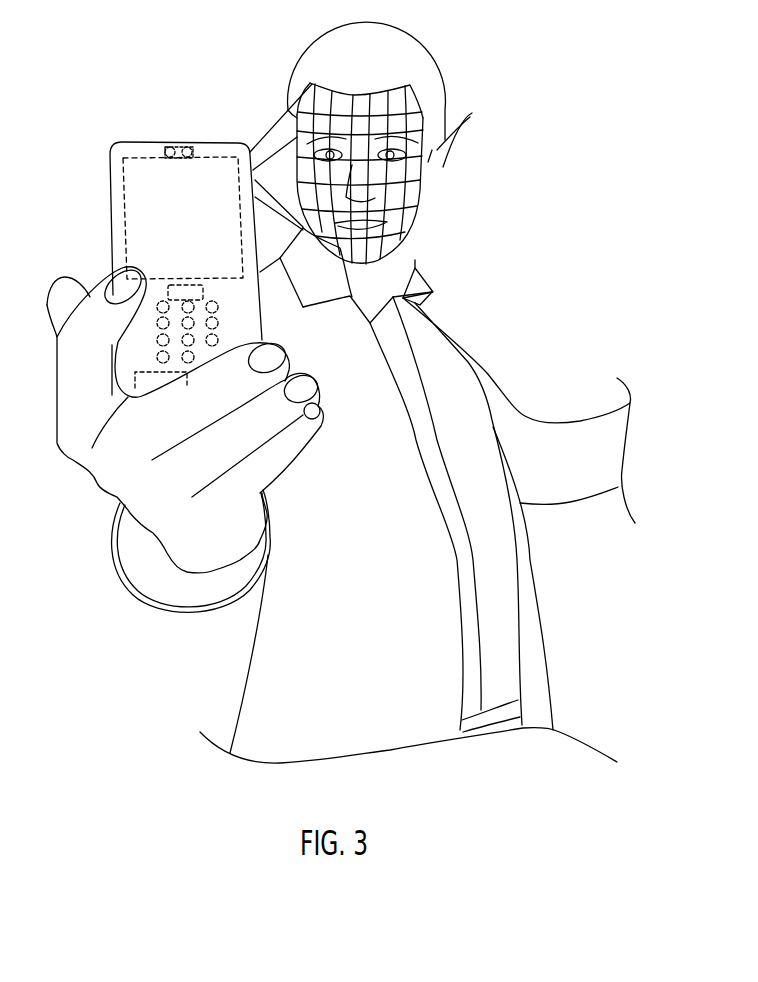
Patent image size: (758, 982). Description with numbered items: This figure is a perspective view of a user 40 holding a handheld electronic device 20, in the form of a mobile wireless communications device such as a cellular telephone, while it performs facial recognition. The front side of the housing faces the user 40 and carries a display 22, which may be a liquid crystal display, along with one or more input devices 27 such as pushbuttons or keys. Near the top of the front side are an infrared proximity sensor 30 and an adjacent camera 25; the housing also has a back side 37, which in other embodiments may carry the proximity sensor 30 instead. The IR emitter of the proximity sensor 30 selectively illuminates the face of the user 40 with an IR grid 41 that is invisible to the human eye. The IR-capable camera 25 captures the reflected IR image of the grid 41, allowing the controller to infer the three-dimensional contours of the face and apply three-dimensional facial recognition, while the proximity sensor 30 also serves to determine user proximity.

The electronic device 20 is at (122, 141).
The display 22 is at (120, 207).
The camera 25 is at (190, 144).
The input devices 27 is at (158, 340).
The infrared proximity sensor 30 is at (168, 144).
The back side 37 is at (108, 183).
The user 40 is at (486, 374).
The IR grid 41 is at (472, 113).